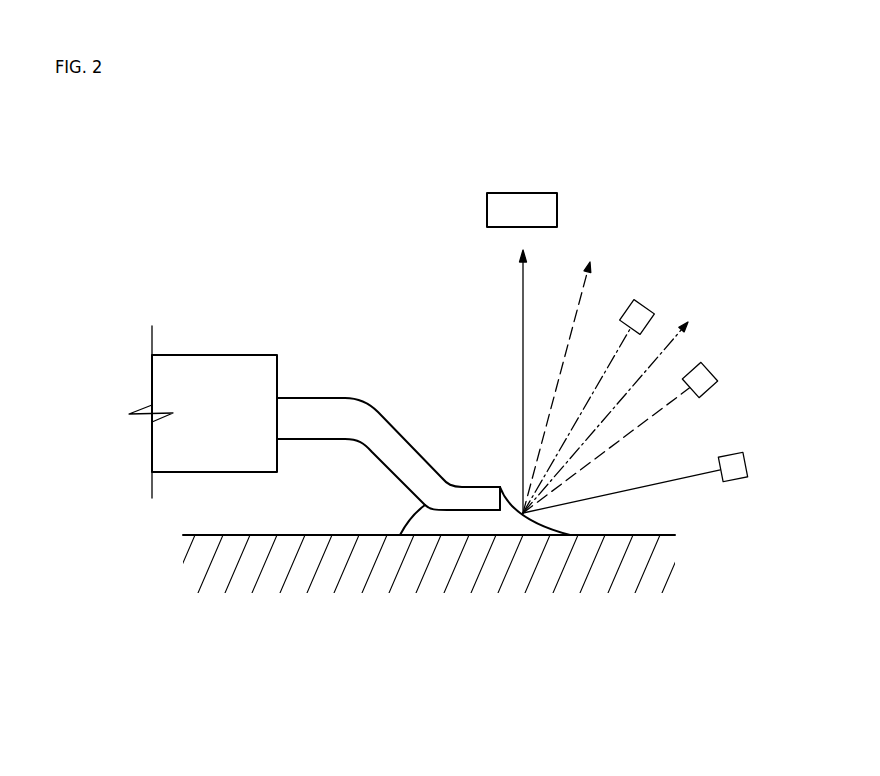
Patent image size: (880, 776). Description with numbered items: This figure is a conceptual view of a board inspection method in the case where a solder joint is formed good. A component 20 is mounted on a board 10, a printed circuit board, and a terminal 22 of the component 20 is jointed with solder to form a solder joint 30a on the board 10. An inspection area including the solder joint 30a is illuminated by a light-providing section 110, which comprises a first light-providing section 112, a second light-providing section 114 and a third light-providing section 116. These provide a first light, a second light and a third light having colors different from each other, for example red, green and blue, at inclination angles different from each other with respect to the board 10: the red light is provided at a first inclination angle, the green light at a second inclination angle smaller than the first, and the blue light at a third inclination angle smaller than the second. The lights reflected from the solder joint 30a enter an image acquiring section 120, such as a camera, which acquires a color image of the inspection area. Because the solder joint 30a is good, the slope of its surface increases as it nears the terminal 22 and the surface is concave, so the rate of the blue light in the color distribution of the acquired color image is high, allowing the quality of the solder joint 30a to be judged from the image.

The board 10 is at (592, 607).
The component 20 is at (237, 325).
The terminal 22 is at (337, 403).
The solder joint 30a is at (413, 520).
The light-providing section 110 is at (656, 381).
The first light-providing section 112 is at (648, 303).
The second light-providing section 114 is at (714, 365).
The third light-providing section 116 is at (752, 452).
The image acquiring section 120 is at (522, 193).